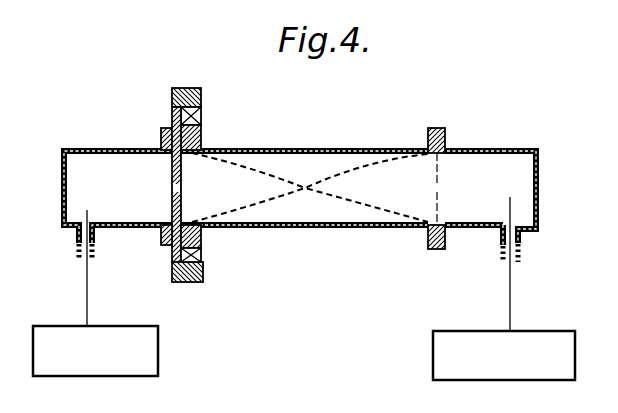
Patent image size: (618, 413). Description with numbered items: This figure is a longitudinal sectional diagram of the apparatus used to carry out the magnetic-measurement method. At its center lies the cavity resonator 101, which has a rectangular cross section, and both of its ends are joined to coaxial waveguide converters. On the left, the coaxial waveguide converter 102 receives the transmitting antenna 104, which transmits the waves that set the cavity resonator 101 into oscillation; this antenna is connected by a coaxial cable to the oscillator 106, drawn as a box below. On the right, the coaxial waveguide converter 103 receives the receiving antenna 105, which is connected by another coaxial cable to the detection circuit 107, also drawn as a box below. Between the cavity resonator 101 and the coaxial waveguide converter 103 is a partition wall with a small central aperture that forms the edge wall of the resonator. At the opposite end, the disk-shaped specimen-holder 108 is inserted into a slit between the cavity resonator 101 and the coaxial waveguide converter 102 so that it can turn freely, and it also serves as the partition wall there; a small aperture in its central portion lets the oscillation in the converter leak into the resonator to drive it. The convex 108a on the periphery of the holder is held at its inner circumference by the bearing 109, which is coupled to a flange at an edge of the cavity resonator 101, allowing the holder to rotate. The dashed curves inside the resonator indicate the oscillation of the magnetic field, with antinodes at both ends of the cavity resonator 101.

The cavity resonator 101 is at (275, 148).
The coaxial waveguide converter 102 is at (107, 146).
The coaxial waveguide converter 103 is at (537, 150).
The transmitting antenna 104 is at (87, 210).
The receiving antenna 105 is at (510, 197).
The oscillator 106 is at (115, 363).
The detection circuit 107 is at (519, 366).
The specimen-holder 108 is at (172, 271).
The convex 108a is at (204, 268).
The bearing 109 is at (198, 114).